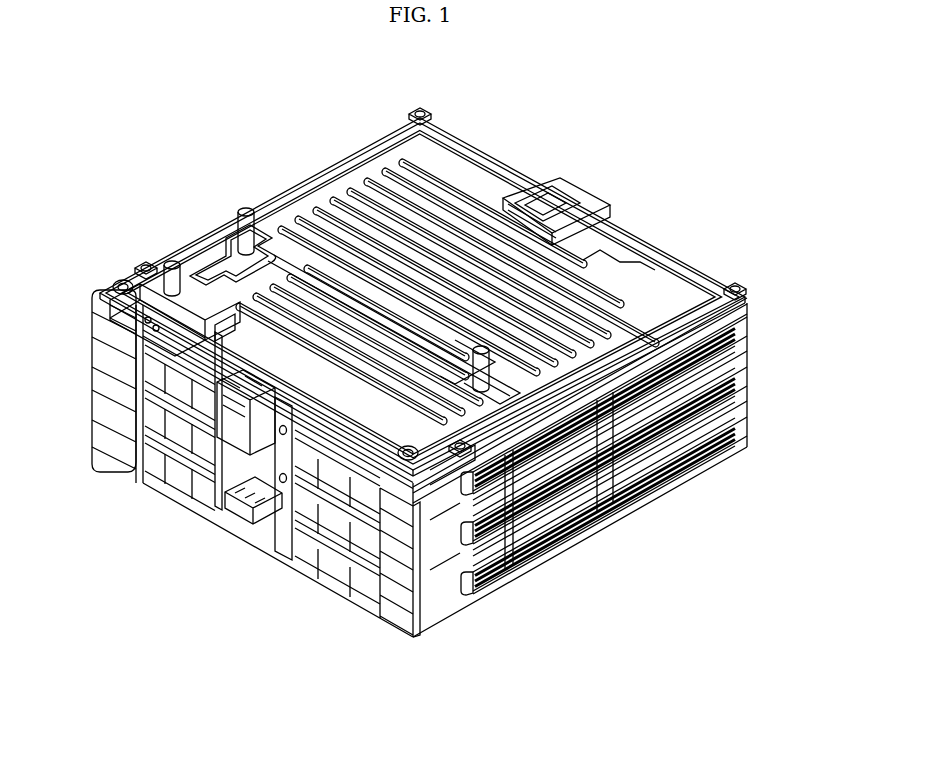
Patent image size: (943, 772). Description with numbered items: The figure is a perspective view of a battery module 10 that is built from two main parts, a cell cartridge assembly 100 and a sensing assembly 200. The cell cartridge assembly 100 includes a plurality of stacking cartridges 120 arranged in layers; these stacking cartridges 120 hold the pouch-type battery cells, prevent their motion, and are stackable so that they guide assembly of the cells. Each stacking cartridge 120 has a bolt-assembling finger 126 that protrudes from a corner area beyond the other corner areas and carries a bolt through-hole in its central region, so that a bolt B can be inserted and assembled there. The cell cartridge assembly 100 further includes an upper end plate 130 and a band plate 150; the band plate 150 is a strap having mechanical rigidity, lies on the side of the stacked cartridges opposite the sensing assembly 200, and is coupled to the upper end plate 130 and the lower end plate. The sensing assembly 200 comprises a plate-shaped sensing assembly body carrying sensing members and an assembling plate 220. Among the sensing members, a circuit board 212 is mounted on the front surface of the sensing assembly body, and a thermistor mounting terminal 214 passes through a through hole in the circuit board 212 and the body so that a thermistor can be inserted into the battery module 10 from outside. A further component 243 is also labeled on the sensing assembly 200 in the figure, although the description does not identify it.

The battery module 10 is at (109, 96).
The cell cartridge assembly 100 is at (332, 143).
The upper end plate 130 is at (660, 274).
The band plate 150 is at (645, 207).
The sensing assembly 200 is at (141, 497).
The assembling plate 220 is at (95, 325).
The bolt-assembling finger 126 is at (98, 312).
The stacking cartridge 120 is at (740, 415).
The circuit board 212 is at (277, 543).
The connector housing 243 is at (232, 425).
The thermistor mounting terminal 214 is at (262, 510).
The bolt B is at (126, 280).